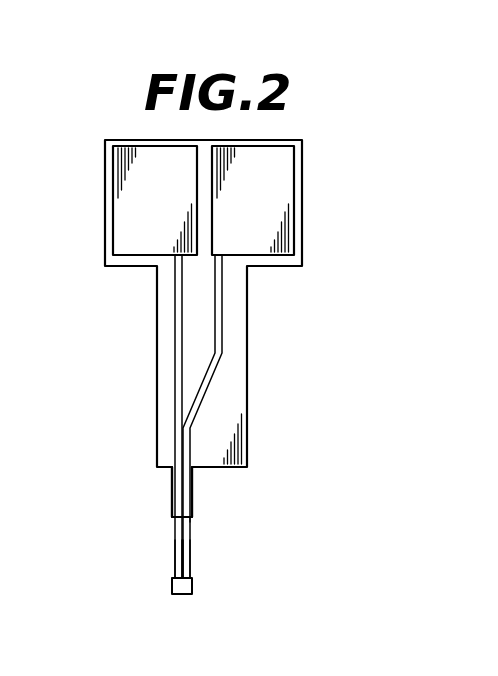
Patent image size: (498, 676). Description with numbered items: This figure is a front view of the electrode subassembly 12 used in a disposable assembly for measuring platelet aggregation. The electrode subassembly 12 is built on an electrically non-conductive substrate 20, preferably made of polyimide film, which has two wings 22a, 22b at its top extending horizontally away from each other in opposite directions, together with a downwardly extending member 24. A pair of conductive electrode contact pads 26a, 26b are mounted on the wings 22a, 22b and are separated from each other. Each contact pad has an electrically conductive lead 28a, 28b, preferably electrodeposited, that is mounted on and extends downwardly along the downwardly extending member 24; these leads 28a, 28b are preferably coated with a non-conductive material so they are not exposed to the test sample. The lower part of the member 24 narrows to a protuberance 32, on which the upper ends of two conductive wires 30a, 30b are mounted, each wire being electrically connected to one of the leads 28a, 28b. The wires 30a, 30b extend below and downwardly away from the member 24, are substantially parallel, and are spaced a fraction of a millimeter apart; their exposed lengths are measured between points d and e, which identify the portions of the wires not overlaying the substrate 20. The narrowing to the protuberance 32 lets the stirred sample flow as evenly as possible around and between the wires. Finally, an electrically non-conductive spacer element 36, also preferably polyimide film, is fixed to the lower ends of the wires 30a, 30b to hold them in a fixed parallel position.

The electrode subassembly 12 is at (314, 120).
The electrically non-conductive substrate 20 is at (248, 292).
The wing 22a is at (105, 163).
The wing 22b is at (302, 240).
The downwardly extending member 24 is at (240, 377).
The conductive electrode contact pad 26a is at (133, 219).
The conductive electrode contact pad 26b is at (272, 188).
The electrically conductive lead 28a is at (178, 323).
The electrically conductive lead 28b is at (222, 343).
The conductive wire 30a is at (175, 557).
The conductive wire 30b is at (190, 557).
The protuberance 32 is at (192, 482).
The spacer element 36 is at (193, 593).
The point d is at (192, 522).
The point e is at (172, 580).